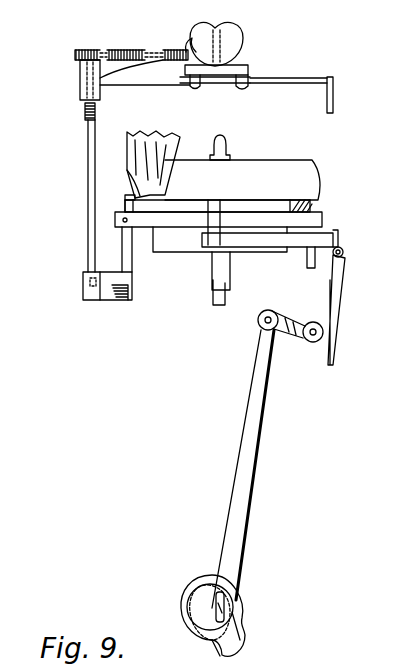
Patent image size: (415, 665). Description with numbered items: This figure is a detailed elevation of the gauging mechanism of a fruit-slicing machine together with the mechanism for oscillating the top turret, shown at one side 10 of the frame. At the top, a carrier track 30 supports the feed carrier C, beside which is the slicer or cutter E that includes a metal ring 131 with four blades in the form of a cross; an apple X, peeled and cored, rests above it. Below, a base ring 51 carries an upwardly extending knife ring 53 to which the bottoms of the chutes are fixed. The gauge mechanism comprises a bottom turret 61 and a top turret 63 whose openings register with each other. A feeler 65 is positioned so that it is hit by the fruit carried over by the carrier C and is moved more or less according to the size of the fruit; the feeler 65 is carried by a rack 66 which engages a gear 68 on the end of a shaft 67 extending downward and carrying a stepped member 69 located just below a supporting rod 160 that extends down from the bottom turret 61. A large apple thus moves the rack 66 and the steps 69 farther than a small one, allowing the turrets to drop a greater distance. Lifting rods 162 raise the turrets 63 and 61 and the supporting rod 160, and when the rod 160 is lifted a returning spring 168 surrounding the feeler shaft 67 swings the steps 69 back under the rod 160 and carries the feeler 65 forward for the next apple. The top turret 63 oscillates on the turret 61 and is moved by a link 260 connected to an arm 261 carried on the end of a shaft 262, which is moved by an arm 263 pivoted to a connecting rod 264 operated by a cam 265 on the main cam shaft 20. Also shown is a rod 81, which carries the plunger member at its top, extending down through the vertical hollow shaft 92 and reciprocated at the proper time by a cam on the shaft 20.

The side 10 is at (326, 331).
The main cam shaft 20 is at (220, 617).
The carrier track 30 is at (285, 80).
The base ring 51 is at (182, 253).
The knife ring 53 is at (255, 165).
The bottom turret 61 is at (320, 217).
The top turret 63 is at (308, 202).
The feeler 65 is at (190, 44).
The rack 66 is at (118, 55).
The shaft 67 is at (88, 178).
The gear 68 is at (76, 56).
The stepped member 69 is at (100, 303).
The rod 81 is at (226, 145).
The vertical hollow shaft 92 is at (224, 273).
The metal ring 131 is at (222, 76).
The supporting rod 160 is at (137, 274).
The lifting rod 162 is at (307, 262).
The returning spring 168 is at (84, 112).
The link 260 is at (322, 237).
The arm 261 is at (342, 282).
The shaft 262 is at (313, 343).
The arm 263 is at (274, 335).
The connecting rod 264 is at (246, 488).
The cam 265 is at (245, 607).
The apple X is at (240, 40).
The slicer E is at (250, 68).
The feed carrier C is at (246, 88).